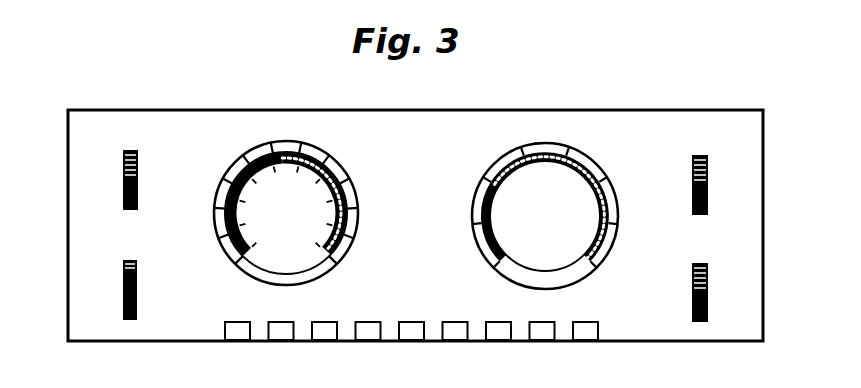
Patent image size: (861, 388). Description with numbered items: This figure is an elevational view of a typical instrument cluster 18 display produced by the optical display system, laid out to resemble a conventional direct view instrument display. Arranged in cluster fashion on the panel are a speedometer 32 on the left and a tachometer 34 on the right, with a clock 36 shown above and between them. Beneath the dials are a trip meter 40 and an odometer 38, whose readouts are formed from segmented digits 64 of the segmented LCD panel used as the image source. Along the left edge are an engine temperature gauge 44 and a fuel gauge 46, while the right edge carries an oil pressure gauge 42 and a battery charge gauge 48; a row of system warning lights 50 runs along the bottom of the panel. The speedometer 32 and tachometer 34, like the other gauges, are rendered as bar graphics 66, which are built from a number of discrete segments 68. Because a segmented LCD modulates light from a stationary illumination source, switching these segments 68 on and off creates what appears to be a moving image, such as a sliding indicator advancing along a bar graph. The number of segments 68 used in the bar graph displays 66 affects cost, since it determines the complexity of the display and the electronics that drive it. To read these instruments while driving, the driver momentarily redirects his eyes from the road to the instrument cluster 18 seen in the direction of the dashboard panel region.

The instrument cluster 18 is at (170, 110).
The speedometer 32 is at (297, 188).
The bar graphics 66 is at (286, 150).
The clock 36 is at (455, 135).
The tachometer 34 is at (577, 150).
The engine temperature gauge 44 is at (125, 170).
The fuel gauge 46 is at (123, 284).
The oil pressure gauge 42 is at (742, 148).
The segments 68 is at (702, 153).
The battery charge gauge 48 is at (708, 283).
The system warning lights 50 is at (233, 343).
The trip meter 40 is at (392, 270).
The segmented digits 64 is at (422, 303).
The odometer 38 is at (465, 334).